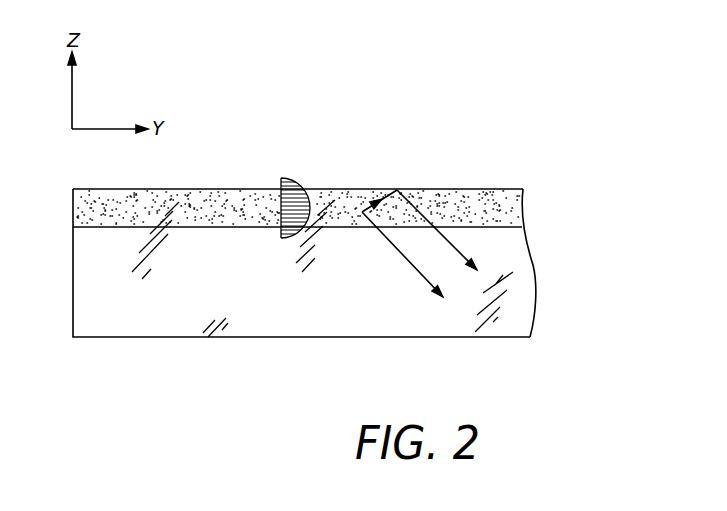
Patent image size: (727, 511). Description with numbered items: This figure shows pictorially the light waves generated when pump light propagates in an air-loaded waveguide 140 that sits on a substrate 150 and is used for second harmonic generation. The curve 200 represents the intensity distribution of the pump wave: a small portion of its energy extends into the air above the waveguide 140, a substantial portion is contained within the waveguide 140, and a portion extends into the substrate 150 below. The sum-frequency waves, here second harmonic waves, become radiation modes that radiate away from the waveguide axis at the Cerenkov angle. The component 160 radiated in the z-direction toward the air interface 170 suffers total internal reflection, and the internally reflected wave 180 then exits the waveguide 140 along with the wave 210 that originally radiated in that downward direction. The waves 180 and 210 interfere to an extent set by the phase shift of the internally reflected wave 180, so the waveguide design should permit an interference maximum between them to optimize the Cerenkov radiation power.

The waveguide 140 is at (143, 189).
The substrate 150 is at (82, 303).
The component of sum-frequency radiation 160 is at (384, 190).
The air interface 170 is at (476, 189).
The internally reflected wave 180 is at (456, 242).
The curve 200 is at (287, 178).
The wave 210 is at (419, 274).